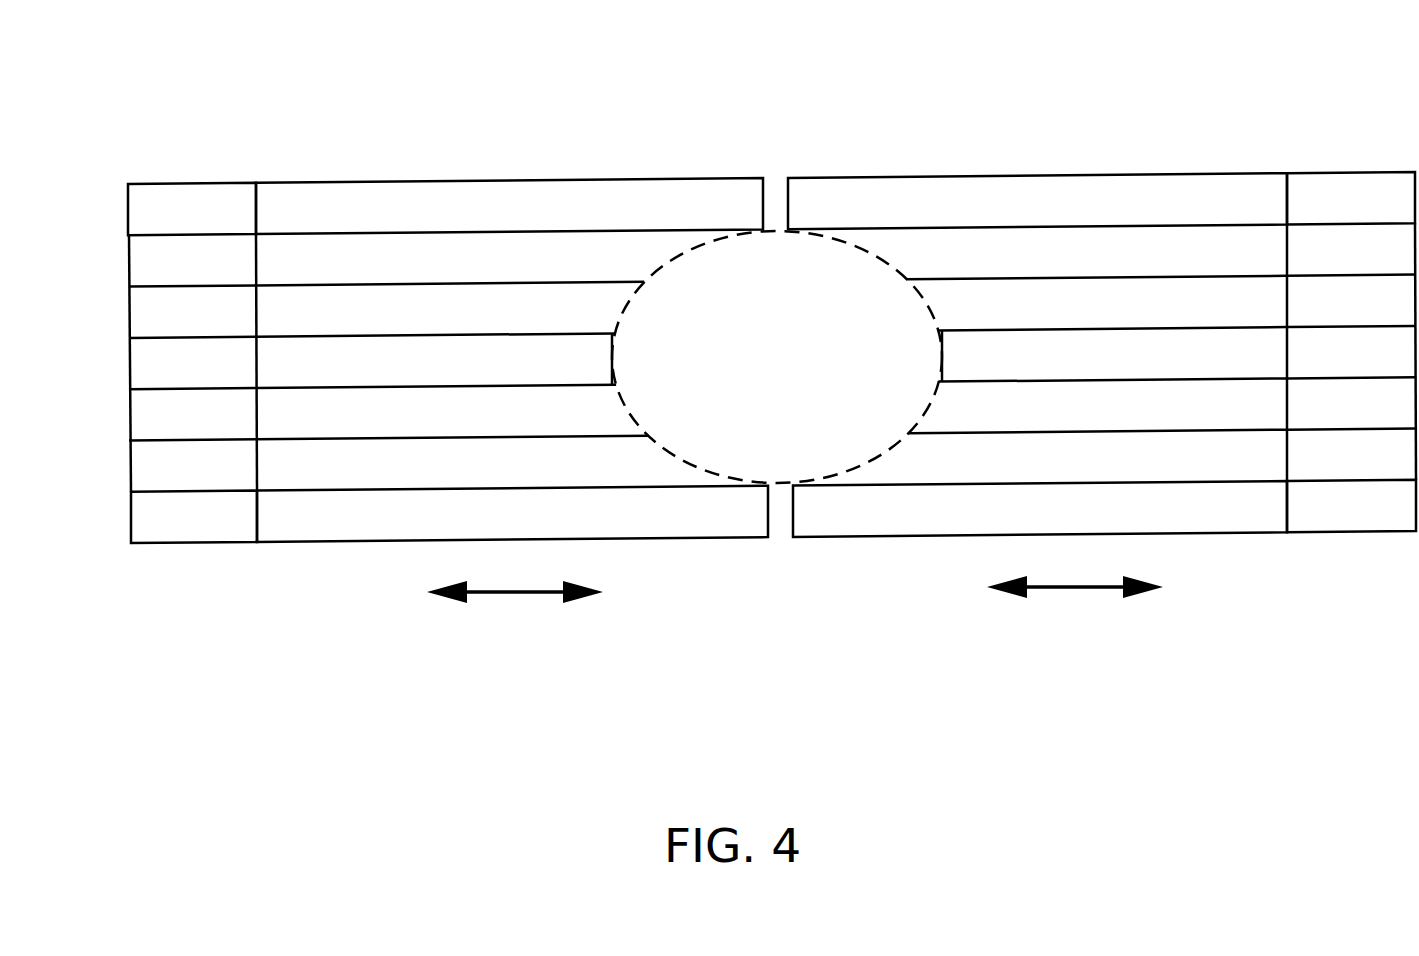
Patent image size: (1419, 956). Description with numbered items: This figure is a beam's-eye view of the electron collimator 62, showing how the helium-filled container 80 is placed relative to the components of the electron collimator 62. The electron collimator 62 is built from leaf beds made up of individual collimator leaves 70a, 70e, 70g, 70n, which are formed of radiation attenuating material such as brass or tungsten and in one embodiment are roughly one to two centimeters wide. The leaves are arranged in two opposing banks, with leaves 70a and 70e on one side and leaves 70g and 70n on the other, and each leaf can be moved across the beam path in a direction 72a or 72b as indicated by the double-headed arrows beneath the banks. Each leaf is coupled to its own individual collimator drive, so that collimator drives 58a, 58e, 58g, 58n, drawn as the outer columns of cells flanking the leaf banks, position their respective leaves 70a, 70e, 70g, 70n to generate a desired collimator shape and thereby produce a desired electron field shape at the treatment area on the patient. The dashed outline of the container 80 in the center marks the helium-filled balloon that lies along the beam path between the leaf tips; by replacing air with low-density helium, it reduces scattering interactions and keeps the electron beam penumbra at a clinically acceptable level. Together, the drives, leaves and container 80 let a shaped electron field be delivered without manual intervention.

The electron collimator 62 is at (805, 78).
The collimator drive 58e is at (162, 230).
The collimator drive 58a is at (167, 537).
The collimator drive 58g is at (1324, 217).
The collimator drive 58n is at (1328, 522).
The collimator leaf 70e is at (482, 224).
The collimator leaf 70a is at (485, 530).
The collimator leaf 70g is at (1009, 217).
The collimator leaf 70n is at (1013, 525).
The container 80 is at (751, 374).
The direction 72a is at (515, 610).
The direction 72b is at (1075, 604).